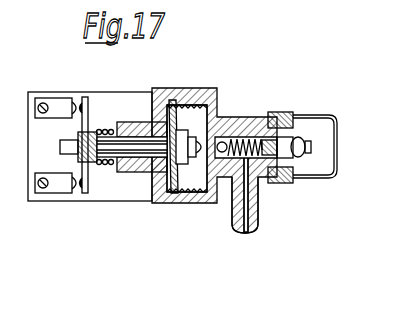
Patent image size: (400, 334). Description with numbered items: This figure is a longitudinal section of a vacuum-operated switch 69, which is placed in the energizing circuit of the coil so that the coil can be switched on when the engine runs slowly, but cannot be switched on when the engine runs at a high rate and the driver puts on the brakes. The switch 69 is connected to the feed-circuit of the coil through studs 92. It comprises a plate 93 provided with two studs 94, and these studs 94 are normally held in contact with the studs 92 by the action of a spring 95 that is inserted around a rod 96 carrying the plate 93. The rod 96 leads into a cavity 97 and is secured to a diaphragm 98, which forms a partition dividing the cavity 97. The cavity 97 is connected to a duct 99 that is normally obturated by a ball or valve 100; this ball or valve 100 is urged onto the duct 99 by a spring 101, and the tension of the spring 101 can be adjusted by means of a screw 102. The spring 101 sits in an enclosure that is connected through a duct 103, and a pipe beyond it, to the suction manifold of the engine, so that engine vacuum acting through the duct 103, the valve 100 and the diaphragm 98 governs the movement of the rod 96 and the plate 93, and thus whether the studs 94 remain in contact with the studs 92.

The switch 69 is at (195, 203).
The studs 92 is at (58, 103).
The plate 93 is at (90, 110).
The studs 94 is at (82, 100).
The spring 95 is at (108, 165).
The rod 96 is at (155, 200).
The cavity 97 is at (200, 172).
The diaphragm 98 is at (174, 112).
The duct 99 is at (203, 128).
The ball or valve 100 is at (226, 140).
The spring 101 is at (256, 121).
The screw 102 is at (297, 115).
The duct 103 is at (246, 217).